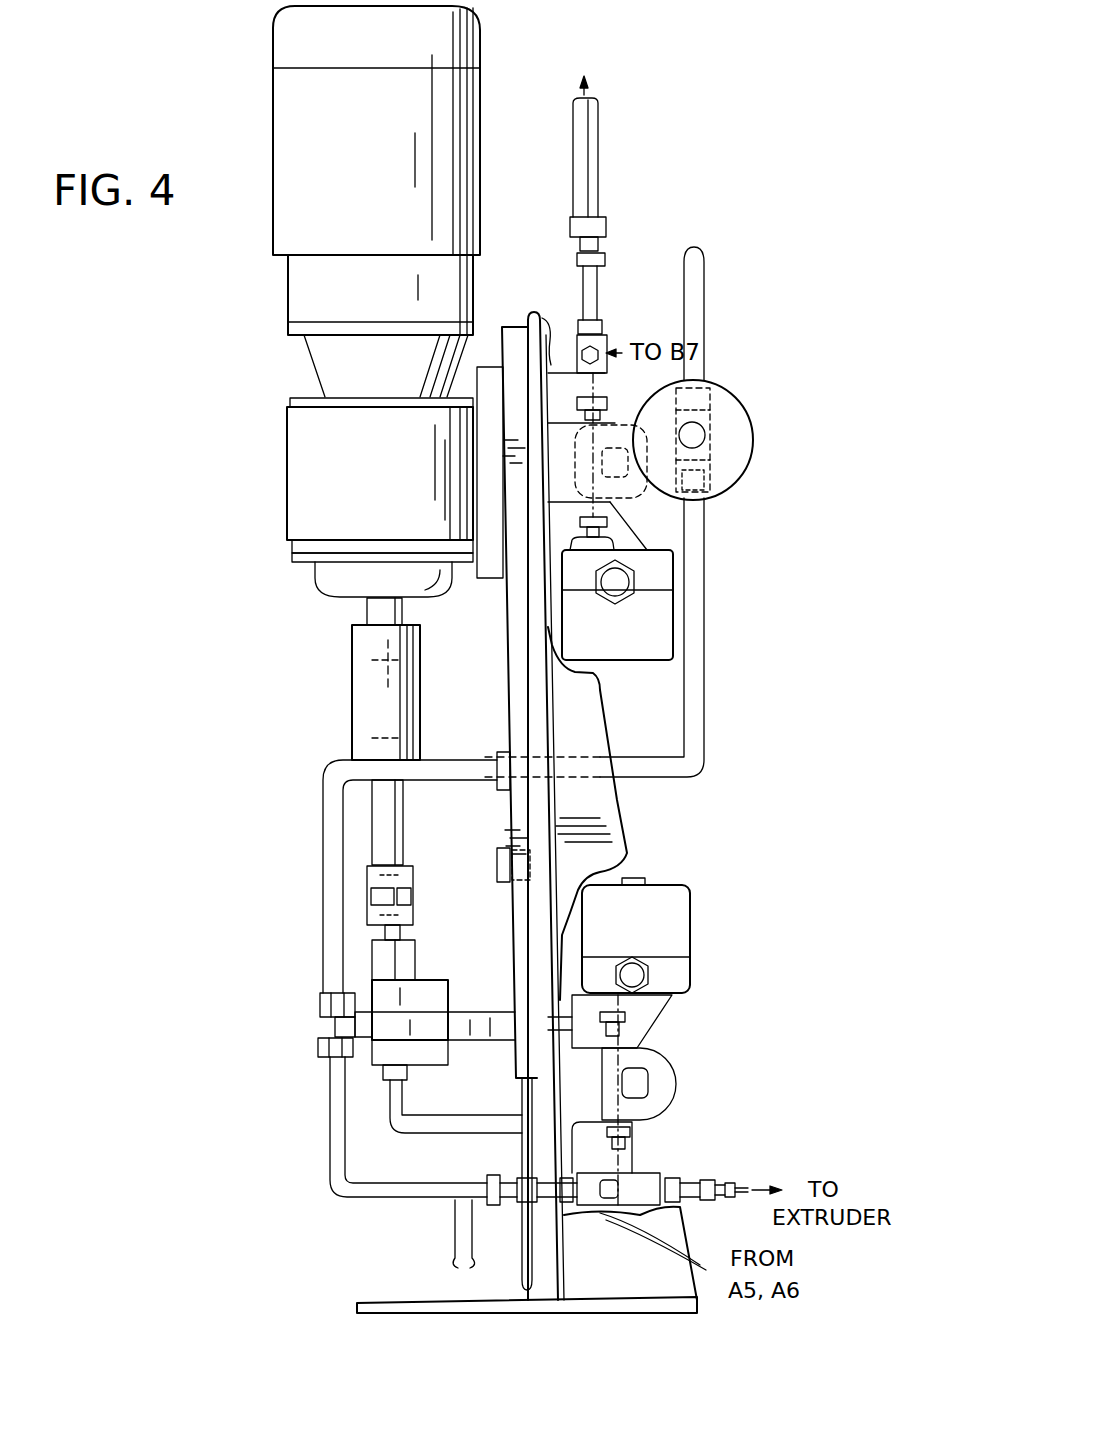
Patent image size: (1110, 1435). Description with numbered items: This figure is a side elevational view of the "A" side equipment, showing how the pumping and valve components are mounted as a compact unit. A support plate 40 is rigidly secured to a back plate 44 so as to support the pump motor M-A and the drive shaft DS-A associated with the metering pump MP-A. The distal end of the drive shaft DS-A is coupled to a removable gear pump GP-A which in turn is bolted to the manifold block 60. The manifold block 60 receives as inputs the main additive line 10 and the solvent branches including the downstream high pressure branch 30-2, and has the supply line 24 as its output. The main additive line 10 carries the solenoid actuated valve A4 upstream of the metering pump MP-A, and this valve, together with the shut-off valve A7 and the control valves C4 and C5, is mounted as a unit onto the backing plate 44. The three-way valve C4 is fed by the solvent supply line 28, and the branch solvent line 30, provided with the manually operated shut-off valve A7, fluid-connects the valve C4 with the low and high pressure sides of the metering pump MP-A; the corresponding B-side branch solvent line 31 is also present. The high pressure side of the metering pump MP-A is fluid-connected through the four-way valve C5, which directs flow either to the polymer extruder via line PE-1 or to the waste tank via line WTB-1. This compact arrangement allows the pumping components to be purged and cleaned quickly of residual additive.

The pump motor M-A is at (376, 170).
The metering pump MP-A is at (325, 628).
The drive shaft DS-A is at (360, 722).
The removable gear pump GP-A is at (416, 898).
The support plate 40 is at (508, 672).
The back plate 44 is at (537, 310).
The solvent supply line 28 is at (590, 170).
The branch solvent line 31 is at (598, 345).
The solenoid actuated valve A4 is at (745, 453).
The main additive line 10 is at (703, 568).
The manually operated shut-off valve A7 is at (497, 878).
The manifold block 60 is at (430, 988).
The branch solvent line 30 is at (522, 1098).
The downstream high pressure branch 30-2 is at (458, 1132).
The supply line 24 is at (336, 1165).
The waste tank line WTB-1 is at (455, 1230).
The solenoid actuated three-way valve C4 is at (640, 650).
The four-way solenoid actuated valve C5 is at (650, 939).
The extruder line PE-1 is at (748, 1185).